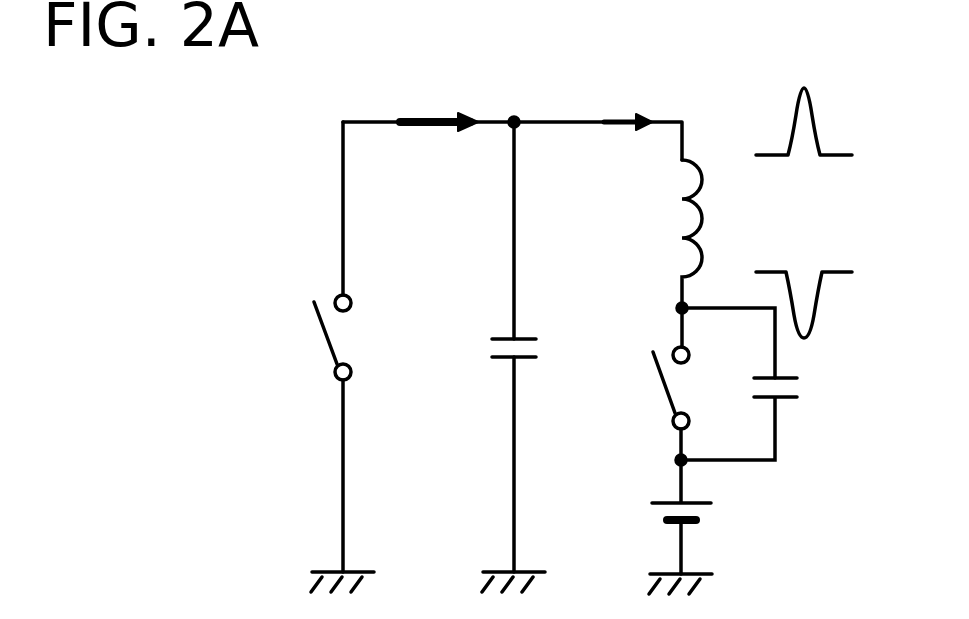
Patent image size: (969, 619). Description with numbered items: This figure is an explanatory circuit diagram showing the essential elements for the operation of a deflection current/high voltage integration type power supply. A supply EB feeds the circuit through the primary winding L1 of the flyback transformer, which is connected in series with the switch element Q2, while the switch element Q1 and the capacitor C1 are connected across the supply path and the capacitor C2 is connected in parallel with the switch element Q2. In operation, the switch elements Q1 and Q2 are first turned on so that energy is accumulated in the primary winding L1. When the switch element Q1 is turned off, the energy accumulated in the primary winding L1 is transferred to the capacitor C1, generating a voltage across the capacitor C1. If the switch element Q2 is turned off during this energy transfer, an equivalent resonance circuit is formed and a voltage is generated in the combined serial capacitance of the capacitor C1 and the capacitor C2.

The switch element Q1 is at (318, 343).
The capacitor C1 is at (490, 340).
The primary winding L1 is at (706, 213).
The switch element Q2 is at (662, 403).
The capacitor C2 is at (800, 385).
The battery / DC power source EB is at (704, 508).